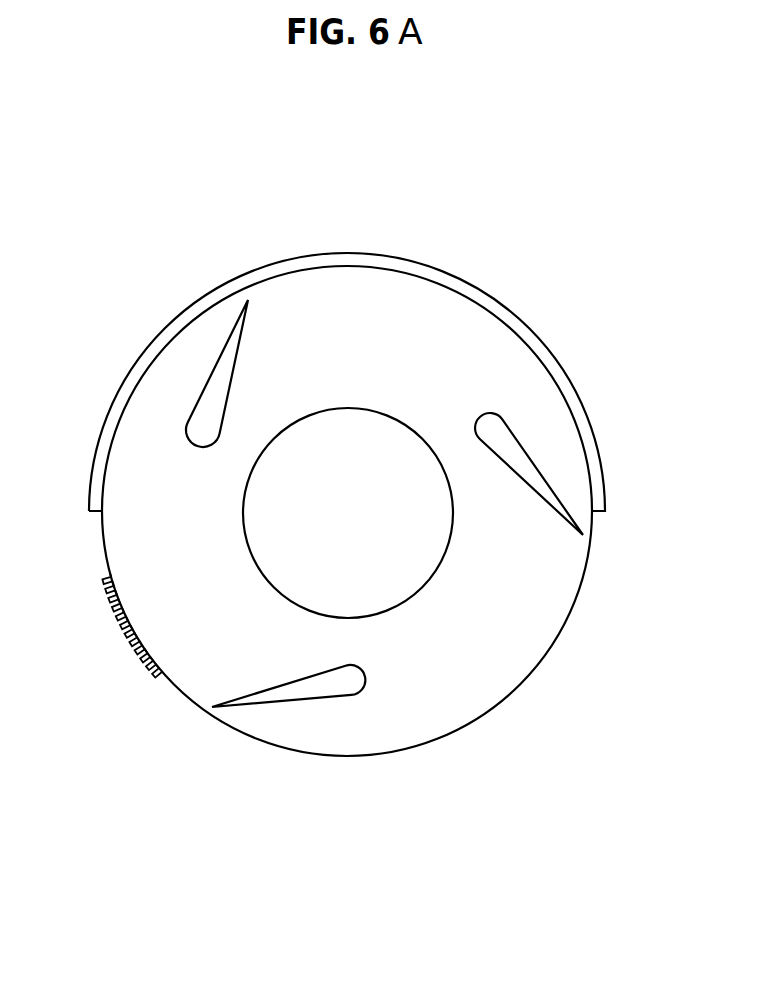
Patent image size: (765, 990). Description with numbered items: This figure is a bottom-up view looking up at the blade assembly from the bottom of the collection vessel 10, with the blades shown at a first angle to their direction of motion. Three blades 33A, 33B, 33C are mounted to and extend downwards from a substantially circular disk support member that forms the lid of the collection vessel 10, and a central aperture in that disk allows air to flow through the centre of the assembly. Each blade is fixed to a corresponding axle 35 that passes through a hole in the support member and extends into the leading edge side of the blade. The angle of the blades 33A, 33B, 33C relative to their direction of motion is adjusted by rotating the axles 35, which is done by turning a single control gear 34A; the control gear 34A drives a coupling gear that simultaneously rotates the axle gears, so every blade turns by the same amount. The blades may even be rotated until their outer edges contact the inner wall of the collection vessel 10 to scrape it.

The collection vessel 10 is at (405, 265).
The blade 33A is at (510, 445).
The blade 33B is at (288, 690).
The blade 33C is at (207, 402).
The control gear 34A is at (121, 653).
The axle 35 is at (387, 523).